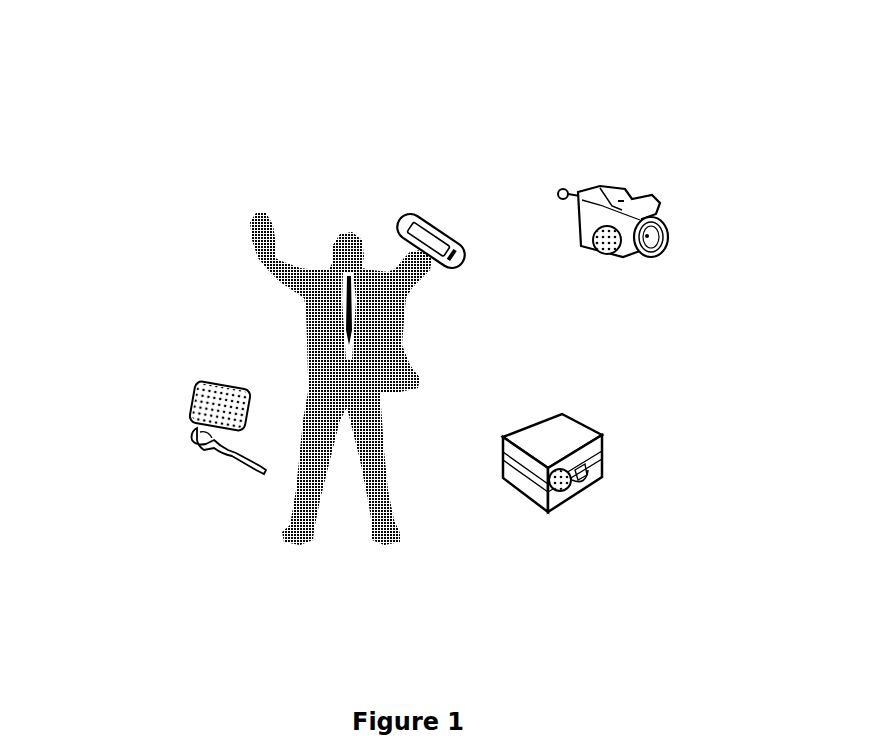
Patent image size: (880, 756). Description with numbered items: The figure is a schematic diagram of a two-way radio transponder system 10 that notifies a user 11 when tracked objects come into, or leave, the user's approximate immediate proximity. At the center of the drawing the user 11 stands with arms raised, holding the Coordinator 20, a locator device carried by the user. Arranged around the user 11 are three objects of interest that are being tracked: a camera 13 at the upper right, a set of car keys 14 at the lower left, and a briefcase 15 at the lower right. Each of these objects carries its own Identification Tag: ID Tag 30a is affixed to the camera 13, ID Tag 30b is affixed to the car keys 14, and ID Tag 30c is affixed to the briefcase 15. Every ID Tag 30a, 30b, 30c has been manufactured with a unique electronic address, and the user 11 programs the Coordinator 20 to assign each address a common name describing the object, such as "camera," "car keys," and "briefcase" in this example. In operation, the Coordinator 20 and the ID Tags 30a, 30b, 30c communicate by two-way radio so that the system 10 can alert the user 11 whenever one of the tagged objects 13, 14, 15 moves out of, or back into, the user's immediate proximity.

The two-way radio transponder system 10 is at (369, 68).
The user 11 is at (276, 246).
The Coordinator 20 is at (437, 226).
The camera 13 is at (652, 200).
The car keys 14 is at (238, 458).
The briefcase 15 is at (580, 417).
The Identification Tag 30a is at (614, 256).
The Identification Tag 30b is at (196, 384).
The Identification Tag 30c is at (586, 490).